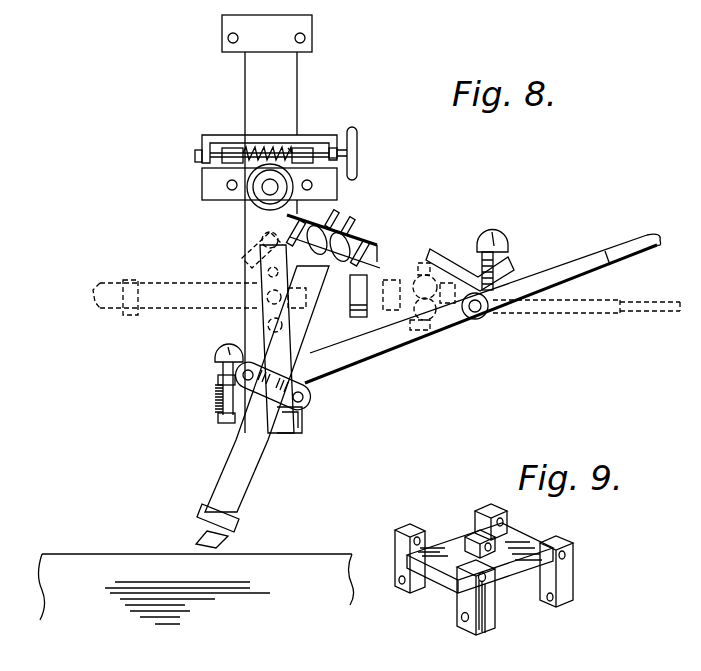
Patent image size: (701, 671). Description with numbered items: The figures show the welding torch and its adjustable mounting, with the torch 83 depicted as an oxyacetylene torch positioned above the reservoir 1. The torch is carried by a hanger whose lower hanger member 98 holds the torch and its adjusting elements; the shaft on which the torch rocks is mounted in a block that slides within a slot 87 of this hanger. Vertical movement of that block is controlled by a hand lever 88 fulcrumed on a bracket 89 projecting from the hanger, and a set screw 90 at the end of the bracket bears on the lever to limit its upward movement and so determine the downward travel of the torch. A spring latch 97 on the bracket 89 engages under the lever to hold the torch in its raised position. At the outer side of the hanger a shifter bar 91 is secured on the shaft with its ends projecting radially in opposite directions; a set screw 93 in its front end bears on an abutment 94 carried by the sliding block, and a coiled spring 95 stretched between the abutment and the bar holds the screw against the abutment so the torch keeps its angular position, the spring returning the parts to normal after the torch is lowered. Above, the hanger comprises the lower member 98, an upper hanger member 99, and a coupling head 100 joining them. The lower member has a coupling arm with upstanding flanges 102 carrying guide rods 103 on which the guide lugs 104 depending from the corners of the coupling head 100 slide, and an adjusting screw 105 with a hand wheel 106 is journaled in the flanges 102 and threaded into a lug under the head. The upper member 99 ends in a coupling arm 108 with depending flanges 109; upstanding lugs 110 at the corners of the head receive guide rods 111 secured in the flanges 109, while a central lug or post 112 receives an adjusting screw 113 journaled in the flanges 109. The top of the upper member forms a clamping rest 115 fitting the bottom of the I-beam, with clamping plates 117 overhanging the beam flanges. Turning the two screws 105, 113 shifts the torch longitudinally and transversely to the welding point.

In FIG. 8, the reservoir 1 is at (98, 577).
In FIG. 8, the torch 83 is at (220, 485).
In FIG. 8, the slot 87 is at (283, 417).
In FIG. 8, the hand lever 88 is at (565, 270).
In FIG. 8, the bracket 89 is at (305, 402).
In FIG. 8, the set screw 90 is at (509, 244).
In FIG. 8, the shifter bar 91 is at (222, 380).
In FIG. 8, the set screw 93 is at (217, 360).
In FIG. 8, the abutment 94 is at (222, 428).
In FIG. 8, the coiled spring 95 is at (217, 410).
In FIG. 8, the spring latch 97 is at (368, 276).
In FIG. 8, the lower hanger member 98 is at (262, 440).
In FIG. 8, the upper hanger member 99 is at (283, 92).
In FIG. 9, the coupling head 100 is at (518, 545).
In FIG. 8, the upstanding flanges 102 is at (203, 181).
In FIG. 8, the guide rods 103 is at (228, 188).
In FIG. 9, the guide lugs 104 is at (410, 593).
In FIG. 8, the adjusting screw 105 is at (265, 190).
In FIG. 8, the hand wheel 106 is at (280, 205).
In FIG. 8, the coupling arm 108 is at (313, 134).
In FIG. 8, the depending flanges 109 is at (203, 167).
In FIG. 8, the upstanding lugs 110 is at (228, 152).
In FIG. 9, the upstanding lugs 110 is at (410, 527).
In FIG. 8, the guide rods 111 is at (252, 150).
In FIG. 8, the lug or post 112 is at (268, 147).
In FIG. 9, the lug or post 112 is at (470, 536).
In FIG. 8, the adjusting screw 113 is at (292, 148).
In FIG. 8, the clamping rest 115 is at (273, 42).
In FIG. 8, the clamping plates 117 is at (355, 170).